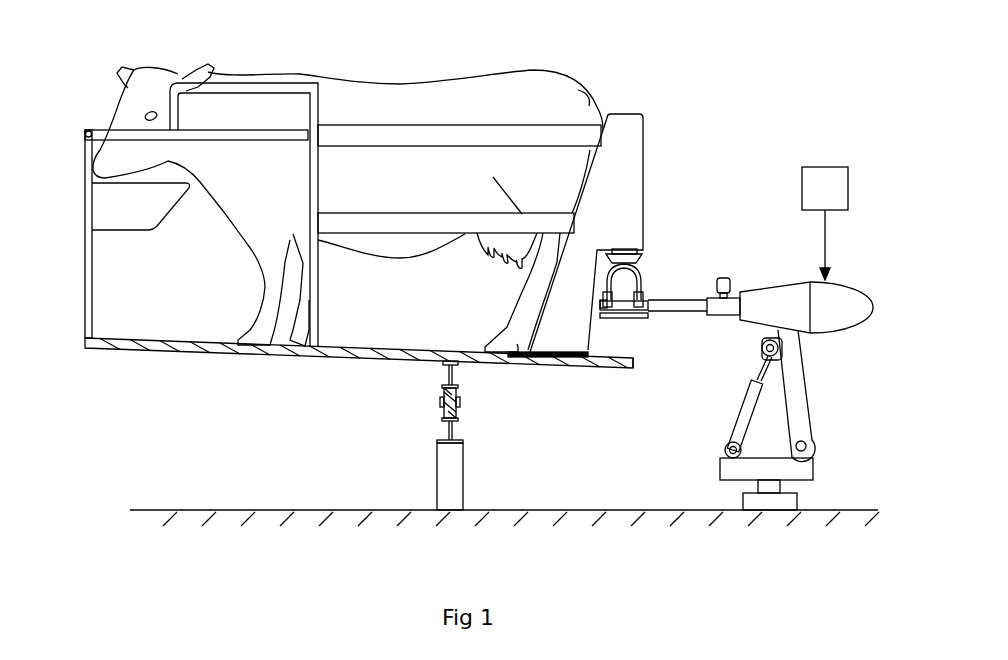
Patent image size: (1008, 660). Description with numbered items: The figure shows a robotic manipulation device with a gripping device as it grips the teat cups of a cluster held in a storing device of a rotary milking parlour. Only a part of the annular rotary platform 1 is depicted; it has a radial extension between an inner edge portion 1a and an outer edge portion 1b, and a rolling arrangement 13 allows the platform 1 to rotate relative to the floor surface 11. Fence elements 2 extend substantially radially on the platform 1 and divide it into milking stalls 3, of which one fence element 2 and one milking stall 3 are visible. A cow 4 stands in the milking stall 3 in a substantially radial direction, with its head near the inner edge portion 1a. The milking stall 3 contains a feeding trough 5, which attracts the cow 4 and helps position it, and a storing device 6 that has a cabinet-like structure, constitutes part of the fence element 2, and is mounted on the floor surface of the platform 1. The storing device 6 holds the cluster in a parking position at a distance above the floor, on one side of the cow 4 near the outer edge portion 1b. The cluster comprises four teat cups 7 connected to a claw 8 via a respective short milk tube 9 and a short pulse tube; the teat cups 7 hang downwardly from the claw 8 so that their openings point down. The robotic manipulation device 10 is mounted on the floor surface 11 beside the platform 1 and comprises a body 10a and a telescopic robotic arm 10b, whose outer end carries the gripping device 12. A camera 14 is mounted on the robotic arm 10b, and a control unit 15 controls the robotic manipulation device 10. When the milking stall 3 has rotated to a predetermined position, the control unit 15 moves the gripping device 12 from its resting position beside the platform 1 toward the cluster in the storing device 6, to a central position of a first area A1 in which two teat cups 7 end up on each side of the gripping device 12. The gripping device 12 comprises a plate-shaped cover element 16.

The annular rotary platform 1 is at (278, 348).
The inner edge portion 1a is at (85, 339).
The outer edge portion 1b is at (637, 370).
The fence element 2 is at (388, 135).
The milking stall 3 is at (394, 318).
The cow 4 is at (360, 92).
The feeding trough 5 is at (127, 212).
The storing device 6 is at (622, 177).
The teat cup 7 is at (602, 304).
The claw 8 is at (624, 250).
The short milk tube 9 is at (608, 283).
The robotic manipulation device 10 is at (782, 302).
The body 10a is at (827, 320).
The telescopic robotic arm 10b is at (684, 307).
The floor surface 11 is at (553, 510).
The gripping device 12 is at (625, 307).
The rolling arrangement 13 is at (443, 418).
The camera 14 is at (721, 277).
The control unit 15 is at (812, 178).
The plate-shaped cover element 16 is at (634, 318).
The first area A1 is at (625, 297).